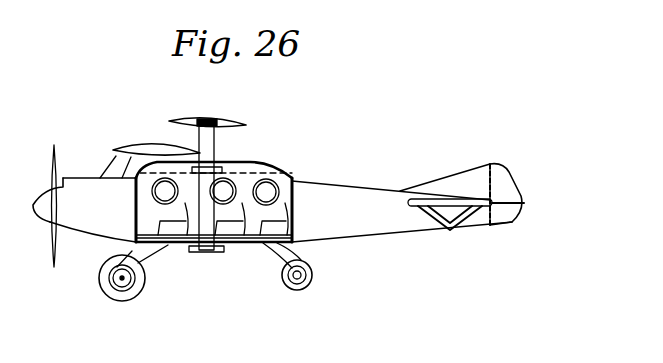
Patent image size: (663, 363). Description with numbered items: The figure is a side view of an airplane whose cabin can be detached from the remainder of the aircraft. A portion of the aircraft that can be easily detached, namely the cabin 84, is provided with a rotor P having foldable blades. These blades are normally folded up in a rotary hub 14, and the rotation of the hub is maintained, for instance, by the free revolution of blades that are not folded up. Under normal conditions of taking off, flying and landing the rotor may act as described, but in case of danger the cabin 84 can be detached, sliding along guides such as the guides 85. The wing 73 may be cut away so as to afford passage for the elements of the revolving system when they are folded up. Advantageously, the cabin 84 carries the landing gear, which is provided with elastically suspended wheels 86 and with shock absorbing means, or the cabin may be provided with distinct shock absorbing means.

The wing 73 is at (133, 147).
The rotor / propeller P is at (244, 124).
The rotary hub 14 is at (212, 151).
The cabin 84 is at (281, 173).
The guides 85 is at (291, 208).
The elastically suspended wheels 86 is at (306, 267).